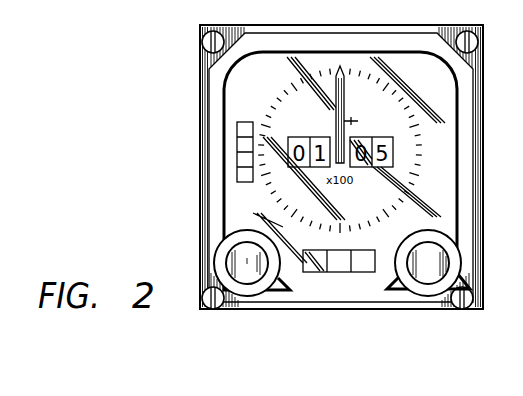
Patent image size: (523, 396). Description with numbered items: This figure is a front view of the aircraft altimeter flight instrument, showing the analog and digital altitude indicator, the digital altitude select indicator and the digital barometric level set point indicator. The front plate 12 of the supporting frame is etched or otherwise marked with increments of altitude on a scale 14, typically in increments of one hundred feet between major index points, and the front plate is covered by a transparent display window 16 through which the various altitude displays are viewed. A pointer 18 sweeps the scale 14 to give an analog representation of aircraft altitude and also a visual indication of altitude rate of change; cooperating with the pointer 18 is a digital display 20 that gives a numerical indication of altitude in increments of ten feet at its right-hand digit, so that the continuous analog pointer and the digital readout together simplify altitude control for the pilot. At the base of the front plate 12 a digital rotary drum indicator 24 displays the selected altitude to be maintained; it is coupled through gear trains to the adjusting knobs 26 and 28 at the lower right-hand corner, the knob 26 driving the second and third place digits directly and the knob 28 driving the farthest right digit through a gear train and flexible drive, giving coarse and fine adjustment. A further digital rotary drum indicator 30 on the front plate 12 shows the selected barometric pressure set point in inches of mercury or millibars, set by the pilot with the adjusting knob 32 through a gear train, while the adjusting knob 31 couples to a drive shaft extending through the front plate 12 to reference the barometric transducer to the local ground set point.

The front plate 12 is at (220, 312).
The scale 14 is at (393, 118).
The transparent display window 16 is at (388, 265).
The pointer 18 is at (343, 99).
The digital display 20 is at (315, 130).
The digital rotary drum indicator 24 is at (332, 274).
The adjusting knob 26 is at (457, 262).
The adjusting knob 28 is at (430, 278).
The digital rotary drum indicator 30 is at (236, 152).
The adjusting knob 31 is at (227, 256).
The adjusting knob 32 is at (277, 288).